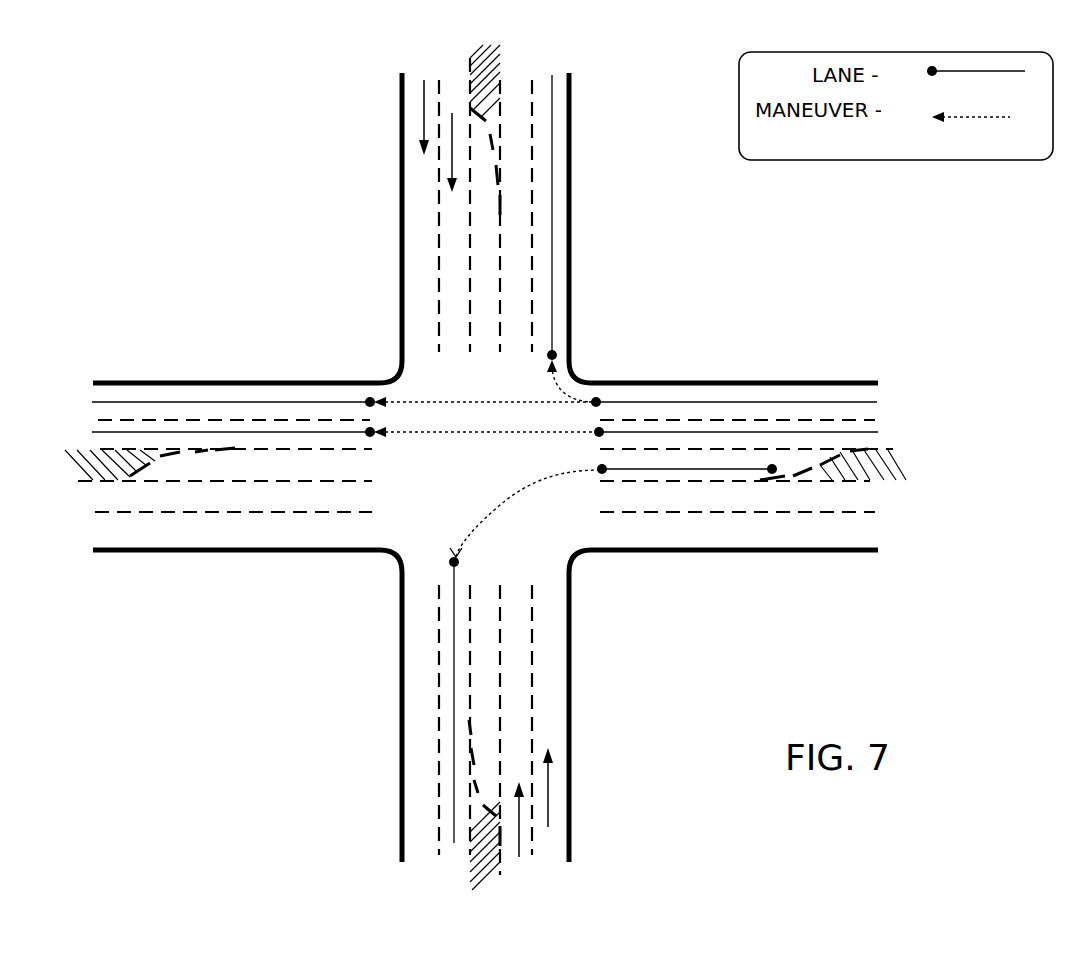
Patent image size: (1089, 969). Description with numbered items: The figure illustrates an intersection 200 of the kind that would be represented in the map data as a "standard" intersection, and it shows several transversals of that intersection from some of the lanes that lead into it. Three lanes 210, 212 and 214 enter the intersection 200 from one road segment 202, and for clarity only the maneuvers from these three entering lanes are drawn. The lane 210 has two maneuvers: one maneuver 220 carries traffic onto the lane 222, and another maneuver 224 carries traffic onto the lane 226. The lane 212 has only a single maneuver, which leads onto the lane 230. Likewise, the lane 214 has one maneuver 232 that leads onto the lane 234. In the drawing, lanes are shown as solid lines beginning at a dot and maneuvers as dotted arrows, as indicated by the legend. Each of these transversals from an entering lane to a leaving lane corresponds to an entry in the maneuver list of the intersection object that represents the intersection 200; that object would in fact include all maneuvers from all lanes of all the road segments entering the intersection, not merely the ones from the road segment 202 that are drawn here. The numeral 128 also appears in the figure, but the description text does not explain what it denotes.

The intersection 200 is at (305, 235).
The road segment 202 is at (865, 557).
The lane 210 is at (760, 397).
The lane 212 is at (790, 432).
The lane 214 is at (657, 470).
The maneuver 220 is at (563, 390).
The lane 222 is at (555, 118).
The maneuver 224 is at (440, 395).
The lane 226 is at (325, 402).
The lane 230 is at (293, 432).
The maneuver 232 is at (550, 485).
The lane 234 is at (447, 639).
The maneuver 128 is at (465, 440).